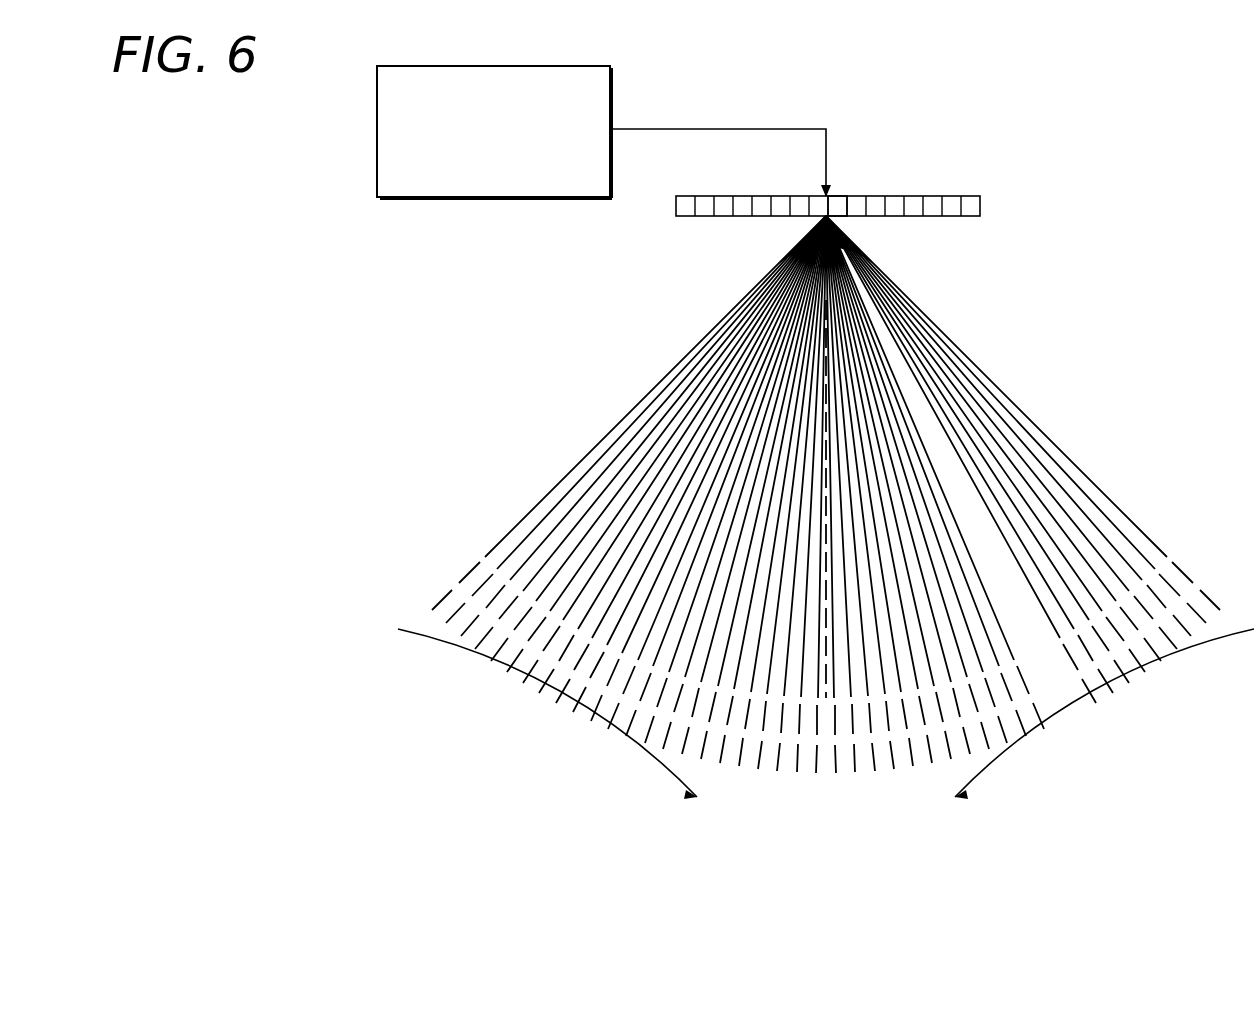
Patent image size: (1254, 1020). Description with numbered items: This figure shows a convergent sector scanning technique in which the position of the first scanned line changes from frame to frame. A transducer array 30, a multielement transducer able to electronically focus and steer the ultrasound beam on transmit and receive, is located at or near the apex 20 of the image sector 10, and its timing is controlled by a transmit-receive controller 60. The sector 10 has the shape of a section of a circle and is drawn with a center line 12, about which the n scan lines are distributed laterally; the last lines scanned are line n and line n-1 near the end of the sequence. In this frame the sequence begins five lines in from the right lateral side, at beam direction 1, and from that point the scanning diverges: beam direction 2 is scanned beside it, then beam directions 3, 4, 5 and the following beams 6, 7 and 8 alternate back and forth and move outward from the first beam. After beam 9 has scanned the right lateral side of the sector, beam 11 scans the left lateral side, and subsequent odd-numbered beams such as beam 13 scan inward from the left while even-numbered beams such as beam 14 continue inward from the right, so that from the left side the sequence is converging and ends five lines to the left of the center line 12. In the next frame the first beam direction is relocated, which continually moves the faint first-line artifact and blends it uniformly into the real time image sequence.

The transmit-receive controller 60 is at (480, 197).
The transducer array 30 is at (720, 217).
The apex 20 is at (838, 217).
The image sector 10 is at (637, 380).
The center line 12 is at (822, 823).
The scan lines n is at (717, 770).
The scan line n-1 is at (737, 772).
The beam direction 1 is at (1008, 452).
The beam direction 2 is at (999, 459).
The beam direction 3 is at (1017, 446).
The beam direction 4 is at (990, 465).
The beam direction 5 is at (1025, 439).
The beam direction 6 is at (981, 471).
The beam direction 7 is at (1033, 432).
The beam direction 8 is at (971, 476).
The beam direction 9 is at (1040, 424).
The beam direction 11 is at (613, 423).
The beam direction 13 is at (622, 433).
The beam direction 14 is at (945, 491).